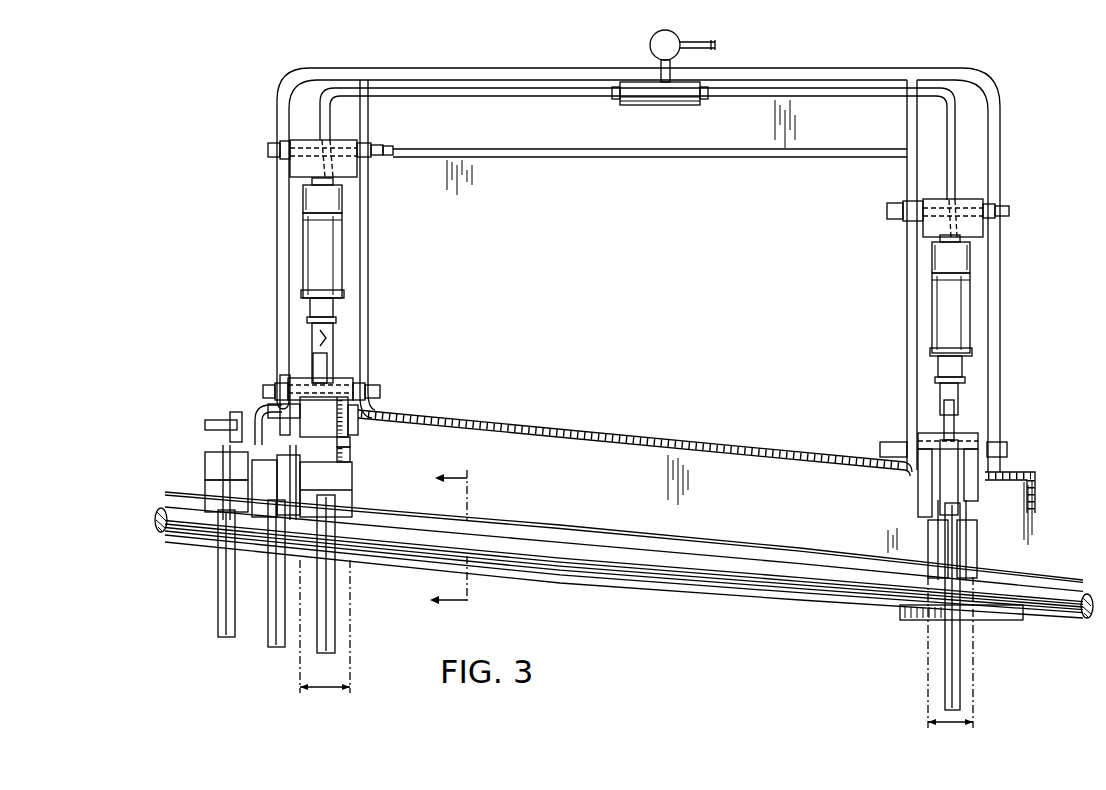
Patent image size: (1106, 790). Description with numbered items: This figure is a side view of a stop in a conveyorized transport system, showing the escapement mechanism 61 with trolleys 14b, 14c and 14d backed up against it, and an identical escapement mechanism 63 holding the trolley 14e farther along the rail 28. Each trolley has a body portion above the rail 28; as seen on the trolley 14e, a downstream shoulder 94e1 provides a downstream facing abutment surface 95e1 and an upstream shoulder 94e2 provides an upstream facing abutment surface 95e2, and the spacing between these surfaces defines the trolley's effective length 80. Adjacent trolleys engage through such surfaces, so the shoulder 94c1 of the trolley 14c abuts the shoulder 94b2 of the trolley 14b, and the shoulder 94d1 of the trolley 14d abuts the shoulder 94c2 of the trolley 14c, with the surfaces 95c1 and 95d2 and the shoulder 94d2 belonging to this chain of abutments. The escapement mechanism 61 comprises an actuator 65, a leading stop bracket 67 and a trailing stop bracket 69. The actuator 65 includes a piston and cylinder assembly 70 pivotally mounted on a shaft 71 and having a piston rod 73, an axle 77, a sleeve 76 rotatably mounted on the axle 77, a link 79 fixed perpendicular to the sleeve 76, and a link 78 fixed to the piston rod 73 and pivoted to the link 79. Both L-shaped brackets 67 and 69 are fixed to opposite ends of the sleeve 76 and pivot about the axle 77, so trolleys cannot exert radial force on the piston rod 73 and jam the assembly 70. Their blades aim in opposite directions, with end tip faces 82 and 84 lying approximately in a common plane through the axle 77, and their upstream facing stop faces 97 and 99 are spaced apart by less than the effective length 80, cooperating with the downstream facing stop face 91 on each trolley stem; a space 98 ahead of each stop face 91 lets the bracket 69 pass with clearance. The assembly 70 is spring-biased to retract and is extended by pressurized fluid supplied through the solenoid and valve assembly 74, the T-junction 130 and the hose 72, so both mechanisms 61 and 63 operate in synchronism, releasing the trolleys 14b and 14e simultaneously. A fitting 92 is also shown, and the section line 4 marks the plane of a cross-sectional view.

The section line 4 is at (458, 545).
The trolley 14b is at (337, 642).
The trolley 14c is at (268, 622).
The trolley 14d is at (217, 590).
The trolley 14e is at (948, 638).
The rail 28 is at (590, 558).
The escapement mechanism 61 is at (383, 279).
The escapement mechanism 63 is at (900, 278).
The actuator 65 is at (298, 316).
The leading stop bracket 67 is at (357, 422).
The trailing stop bracket 69 is at (280, 375).
The piston and cylinder assembly 70 is at (330, 250).
The shaft 71 is at (290, 145).
The hose 72 is at (520, 96).
The piston rod 73 is at (335, 315).
The solenoid and valve assembly 74 is at (651, 46).
The sleeve 76 is at (353, 382).
The axle 77 is at (381, 388).
The link 78 is at (326, 340).
The link 79 is at (342, 378).
The effective length 80 is at (327, 683).
The end tip face 82 is at (350, 462).
The end tip face 84 is at (324, 417).
The stop face 91 is at (240, 408).
The fitting 92 is at (218, 435).
The shoulder 94b2 is at (320, 507).
The shoulder 94c1 is at (304, 488).
The shoulder 94c2 is at (262, 540).
The shoulder 94d1 is at (245, 478).
The shoulder 94d2 is at (213, 487).
The downstream shoulder 94e1 is at (970, 542).
The upstream shoulder 94e2 is at (940, 538).
The abutment surface 95c1 is at (362, 482).
The abutment surface 95d2 is at (222, 525).
The downstream facing abutment surface 95e1 is at (970, 562).
The upstream facing abutment surface 95e2 is at (940, 545).
The stop face 97 is at (352, 450).
The space 98 is at (270, 406).
The stop face 99 is at (226, 420).
The T-junction 130 is at (680, 106).